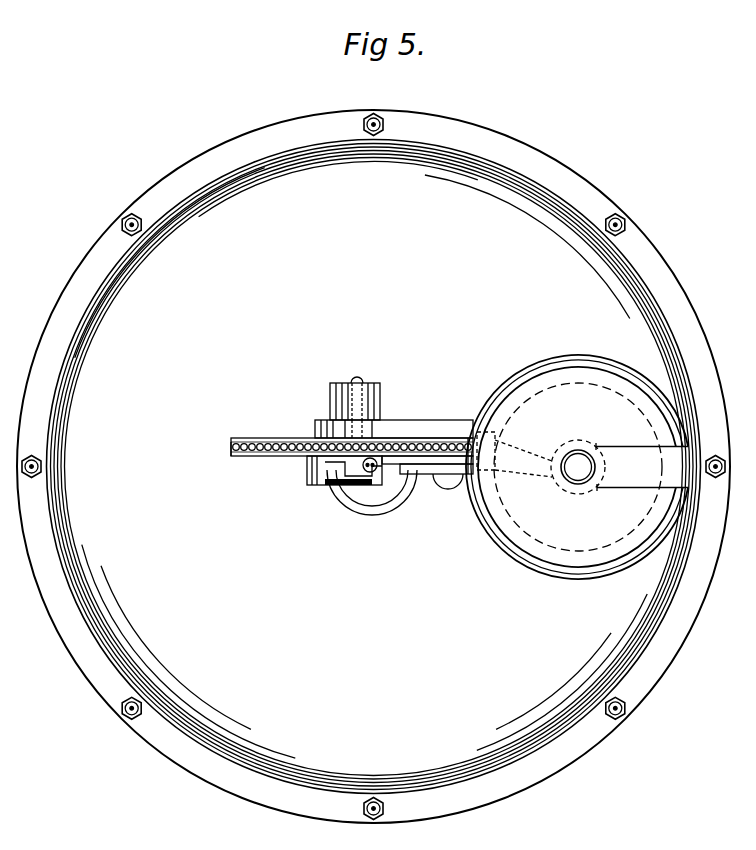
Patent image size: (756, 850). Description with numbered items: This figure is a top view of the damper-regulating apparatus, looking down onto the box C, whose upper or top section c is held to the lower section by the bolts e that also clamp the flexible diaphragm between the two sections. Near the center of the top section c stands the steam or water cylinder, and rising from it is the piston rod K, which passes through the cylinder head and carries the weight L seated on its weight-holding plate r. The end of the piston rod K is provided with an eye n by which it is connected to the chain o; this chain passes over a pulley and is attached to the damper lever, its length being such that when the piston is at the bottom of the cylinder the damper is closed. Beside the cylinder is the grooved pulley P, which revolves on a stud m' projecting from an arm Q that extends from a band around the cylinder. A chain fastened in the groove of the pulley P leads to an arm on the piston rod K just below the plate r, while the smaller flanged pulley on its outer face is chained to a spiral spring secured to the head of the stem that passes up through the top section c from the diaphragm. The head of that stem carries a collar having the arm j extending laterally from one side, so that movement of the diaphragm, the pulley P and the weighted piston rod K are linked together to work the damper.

The box C is at (373, 466).
The top section of box c is at (374, 467).
The bolts e is at (140, 232).
The grooved pulley P is at (249, 438).
The chain o is at (232, 456).
The arm Q is at (420, 428).
The stud m' is at (362, 387).
The eye n is at (318, 488).
The arm j is at (303, 467).
The weight L is at (577, 467).
The piston rod K is at (578, 467).
The plate r is at (642, 467).